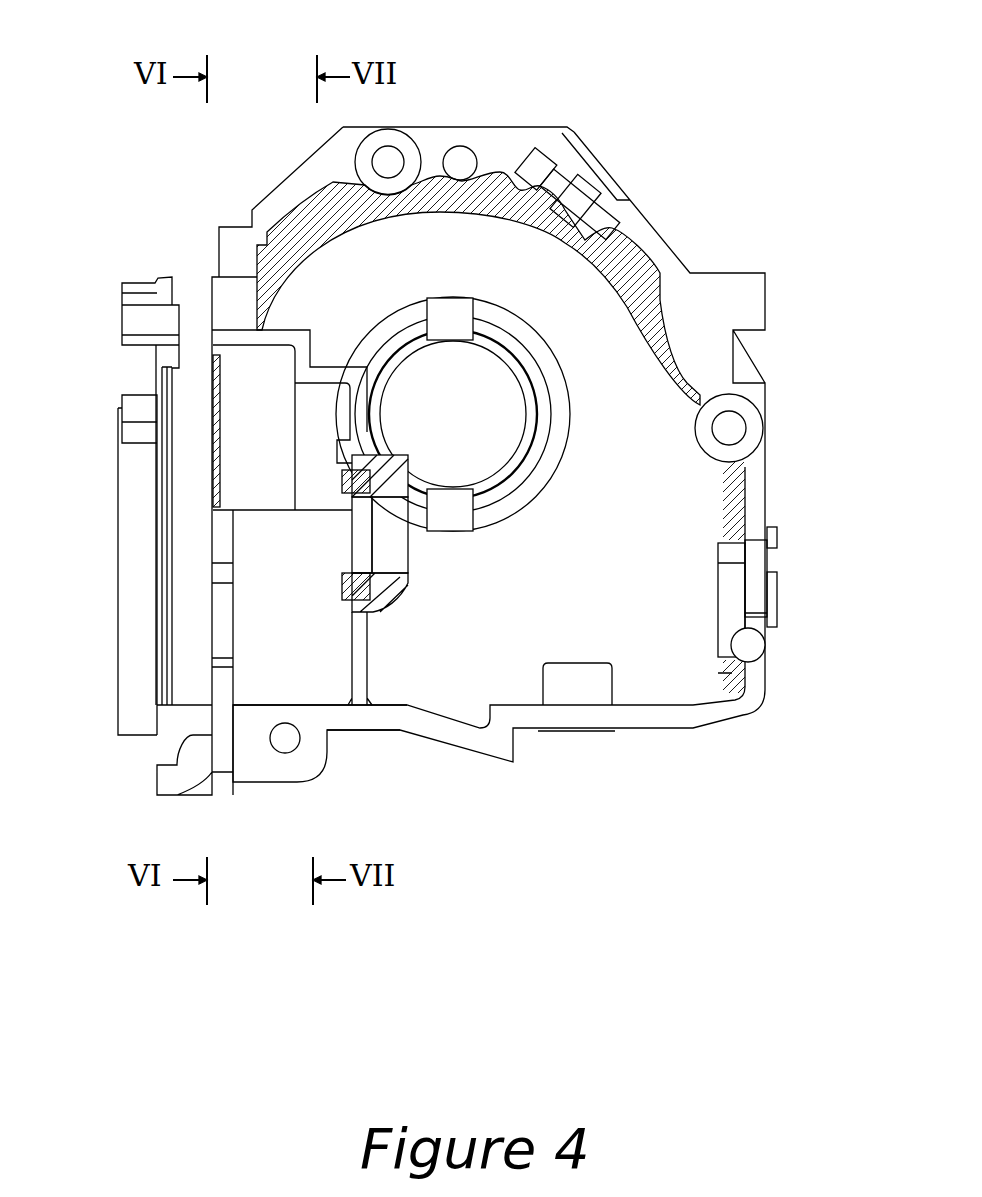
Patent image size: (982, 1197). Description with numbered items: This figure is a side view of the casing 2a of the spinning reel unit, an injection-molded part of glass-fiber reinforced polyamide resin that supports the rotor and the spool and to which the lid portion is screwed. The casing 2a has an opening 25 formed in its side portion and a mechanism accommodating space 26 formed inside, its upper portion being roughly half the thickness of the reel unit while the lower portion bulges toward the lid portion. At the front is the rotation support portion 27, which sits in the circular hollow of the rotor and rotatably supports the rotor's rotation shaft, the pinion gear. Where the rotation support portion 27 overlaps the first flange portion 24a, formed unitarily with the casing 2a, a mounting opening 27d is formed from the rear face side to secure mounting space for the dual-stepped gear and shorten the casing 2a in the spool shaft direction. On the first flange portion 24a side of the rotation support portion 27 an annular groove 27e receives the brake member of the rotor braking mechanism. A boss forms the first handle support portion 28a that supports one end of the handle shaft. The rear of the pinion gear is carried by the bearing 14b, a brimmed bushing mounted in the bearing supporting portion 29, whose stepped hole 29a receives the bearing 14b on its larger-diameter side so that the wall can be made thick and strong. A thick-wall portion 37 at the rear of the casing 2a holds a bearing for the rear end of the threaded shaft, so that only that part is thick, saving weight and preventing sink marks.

The casing 2a is at (540, 110).
The first flange portion 24a is at (238, 252).
The annular groove 27e is at (193, 305).
The rotation support portion 27 is at (142, 688).
The mounting opening 27d is at (217, 467).
The first handle support portion 28a is at (512, 487).
The stepped hole 29a is at (393, 555).
The bearing supporting portion 29 is at (375, 610).
The bearing 14b is at (343, 580).
The thick-wall portion 37 is at (730, 553).
The mechanism accommodating space 26 is at (470, 675).
The opening 25 is at (640, 735).